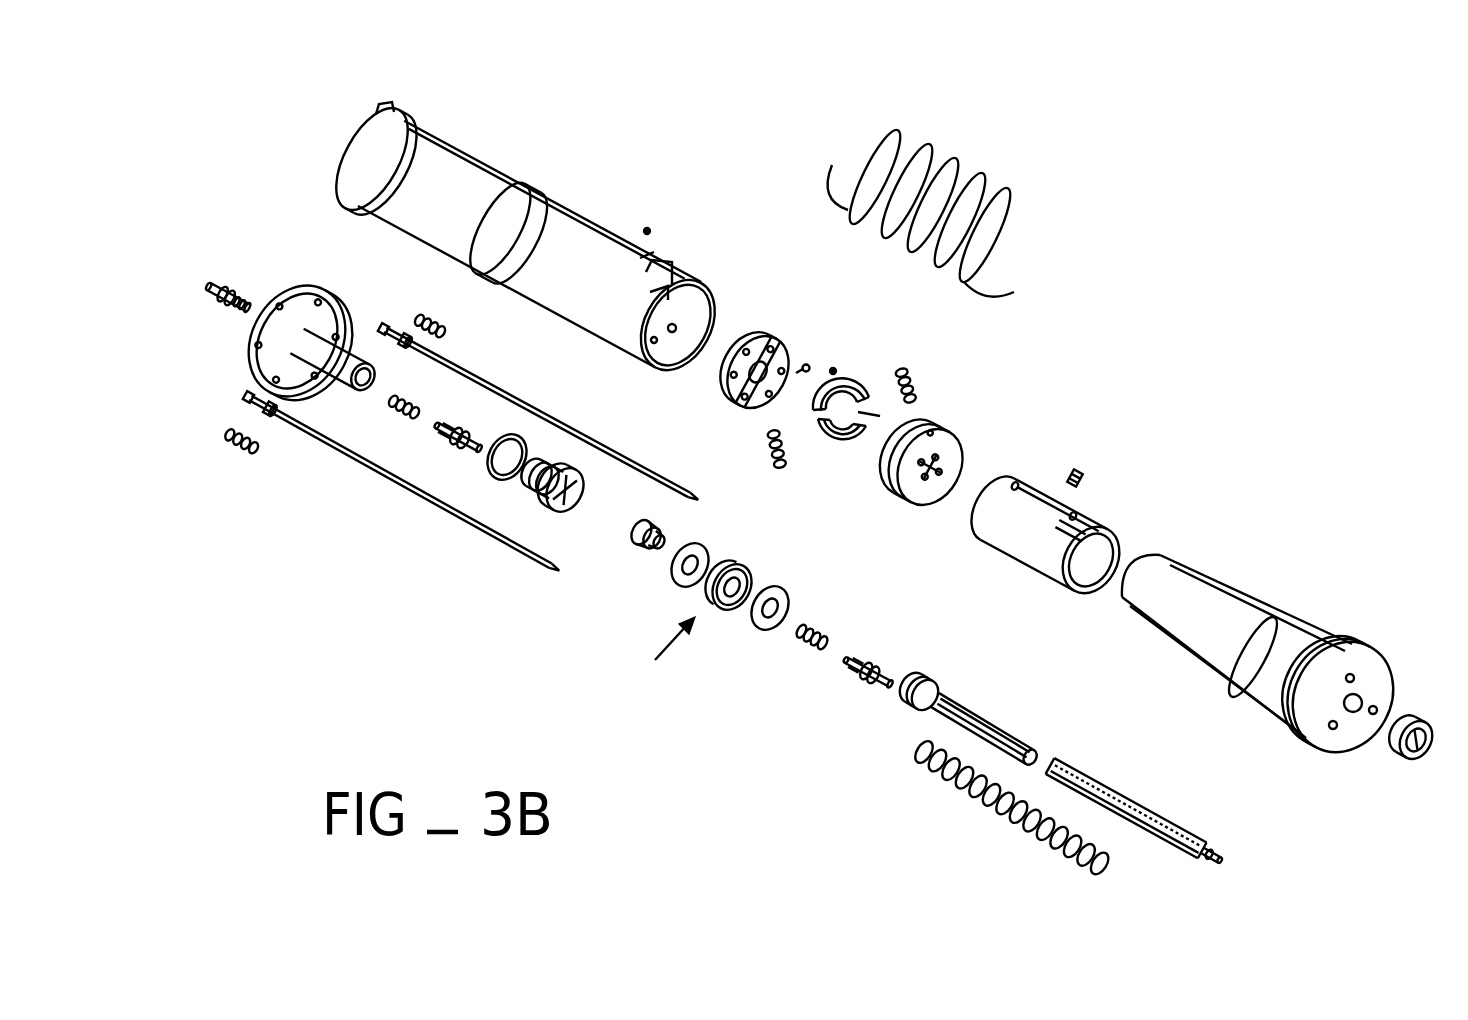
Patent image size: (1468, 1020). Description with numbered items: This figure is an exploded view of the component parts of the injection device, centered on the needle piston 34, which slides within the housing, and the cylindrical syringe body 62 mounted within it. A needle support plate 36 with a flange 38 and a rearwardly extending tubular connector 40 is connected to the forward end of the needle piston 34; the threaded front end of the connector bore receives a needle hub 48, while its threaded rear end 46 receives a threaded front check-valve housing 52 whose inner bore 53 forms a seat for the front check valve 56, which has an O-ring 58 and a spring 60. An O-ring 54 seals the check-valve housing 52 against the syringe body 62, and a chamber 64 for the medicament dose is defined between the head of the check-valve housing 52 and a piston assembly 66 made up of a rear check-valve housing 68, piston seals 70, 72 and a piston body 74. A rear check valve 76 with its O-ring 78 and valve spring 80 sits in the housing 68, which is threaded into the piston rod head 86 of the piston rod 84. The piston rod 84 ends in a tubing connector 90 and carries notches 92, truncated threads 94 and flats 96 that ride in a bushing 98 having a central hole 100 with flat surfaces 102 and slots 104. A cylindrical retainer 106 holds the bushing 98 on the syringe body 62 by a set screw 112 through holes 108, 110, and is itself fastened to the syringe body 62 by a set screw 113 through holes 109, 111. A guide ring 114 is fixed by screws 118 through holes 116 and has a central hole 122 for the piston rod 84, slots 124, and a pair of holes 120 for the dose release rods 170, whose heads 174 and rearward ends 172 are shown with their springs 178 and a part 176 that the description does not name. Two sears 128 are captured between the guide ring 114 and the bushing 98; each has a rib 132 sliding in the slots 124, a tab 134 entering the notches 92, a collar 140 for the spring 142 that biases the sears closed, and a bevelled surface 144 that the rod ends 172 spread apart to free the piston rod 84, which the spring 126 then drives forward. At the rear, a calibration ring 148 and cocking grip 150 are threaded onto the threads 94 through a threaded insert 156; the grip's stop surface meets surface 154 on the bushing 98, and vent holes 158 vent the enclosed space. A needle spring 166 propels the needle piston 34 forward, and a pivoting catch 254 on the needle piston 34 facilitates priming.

The needle piston 34 is at (533, 243).
The needle support plate 36 is at (310, 339).
The flange 38 is at (258, 345).
The tubular connector 40 is at (354, 391).
The threaded rear end 46 is at (365, 393).
The needle hub 48 is at (227, 290).
The front check-valve housing 52 is at (565, 487).
The inner bore 53 is at (582, 494).
The O-ring 54 is at (527, 460).
The front check valve 56 is at (443, 435).
The O-ring 58 is at (463, 431).
The spring 60 is at (416, 405).
The syringe body 62 is at (693, 337).
The chamber 64 is at (668, 292).
The piston assembly 66 is at (669, 653).
The rear check-valve housing 68 is at (660, 530).
The piston seal 70 is at (699, 554).
The piston seal 72 is at (784, 598).
The piston body 74 is at (742, 575).
The rear check valve 76 is at (873, 655).
The O-ring 78 is at (878, 668).
The valve spring 80 is at (812, 628).
The piston rod 84 is at (1006, 718).
The piston rod head 86 is at (930, 688).
The tubing connector 90 is at (1218, 858).
The slots 92 is at (1032, 752).
The truncated threads 94 is at (1169, 813).
The flats 96 is at (948, 718).
The bushing 98 is at (950, 495).
The central hole 100 is at (960, 495).
The flat surfaces 102 is at (960, 495).
The slots 104 is at (960, 481).
The retainer 106 is at (1066, 518).
The hole 108 is at (1078, 514).
The hole 109 is at (1020, 485).
The hole 110 is at (950, 479).
The hole 111 is at (650, 260).
The set screw 112 is at (1085, 477).
The set screw 113 is at (644, 229).
The guide ring 114 is at (713, 337).
The holes 116 is at (806, 362).
The screws 118 is at (834, 366).
The holes 120 is at (713, 337).
The central hole 122 is at (735, 337).
The slots 124 is at (762, 336).
The spring 126 is at (938, 775).
The sears 128 is at (854, 419).
The rib 132 is at (854, 408).
The tab 134 is at (805, 417).
The collar 140 is at (863, 393).
The spring 142 is at (915, 373).
The bevelled surface 144 is at (858, 413).
The calibration ring 148 is at (1256, 662).
The cocking grip 150 is at (1344, 671).
The stop surface 154 is at (934, 483).
The threaded insert 156 is at (1404, 748).
The vent holes 158 is at (1376, 708).
The needle spring 166 is at (1035, 207).
The dose release rods 170 is at (470, 431).
The rearward ends 172 is at (698, 497).
The heads 174 is at (380, 325).
The rod collar 176 is at (408, 332).
The springs 178 is at (446, 327).
The catch 254 is at (661, 276).